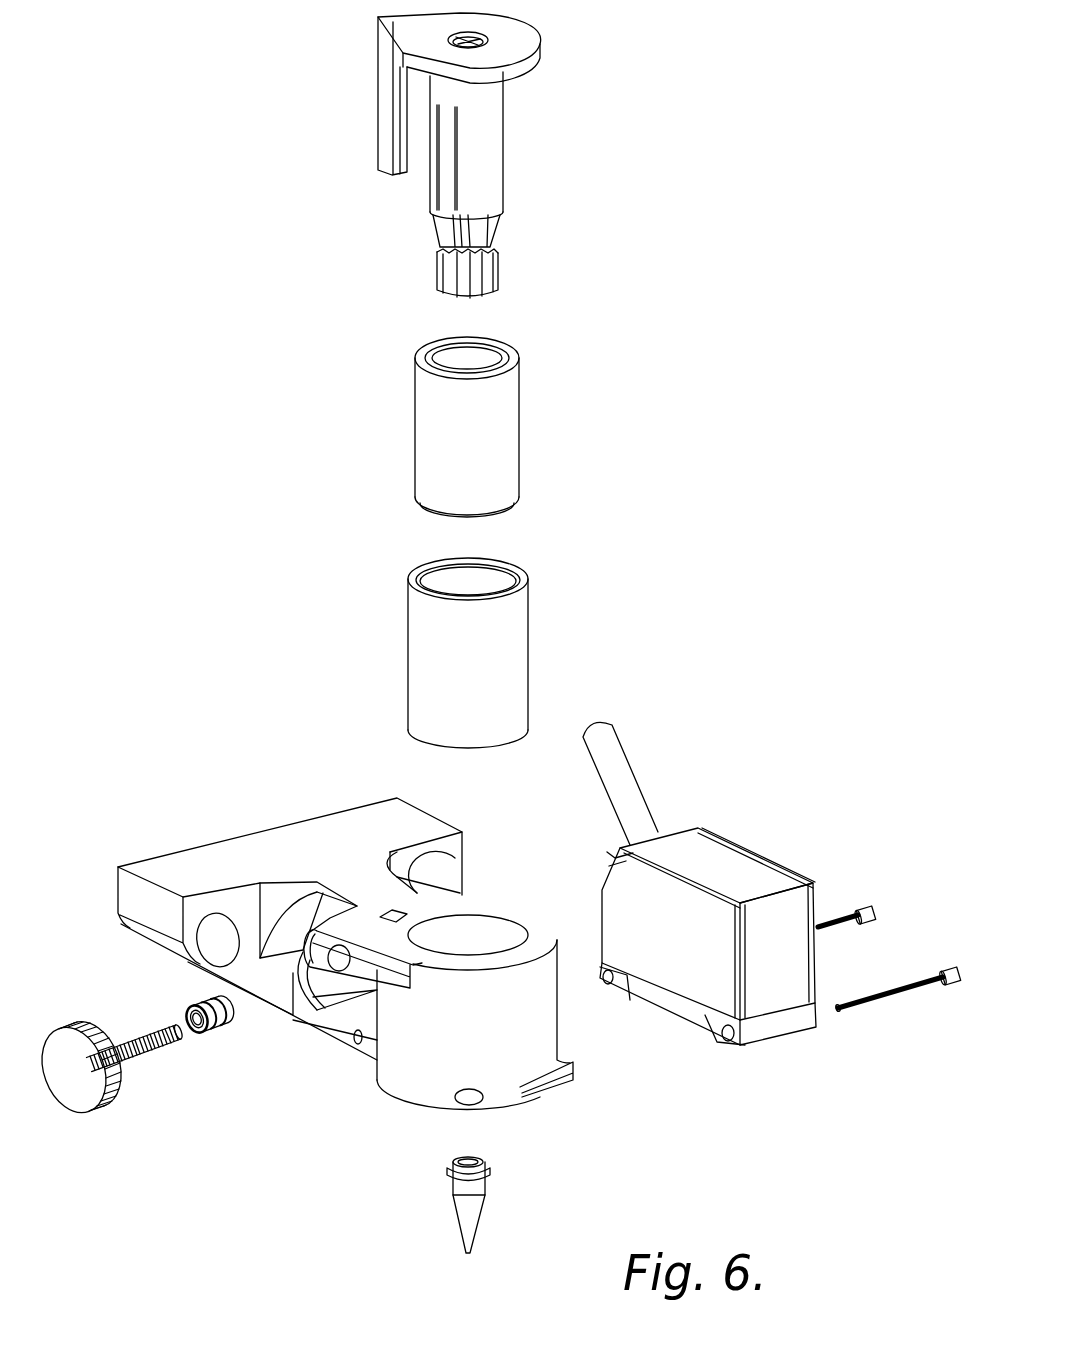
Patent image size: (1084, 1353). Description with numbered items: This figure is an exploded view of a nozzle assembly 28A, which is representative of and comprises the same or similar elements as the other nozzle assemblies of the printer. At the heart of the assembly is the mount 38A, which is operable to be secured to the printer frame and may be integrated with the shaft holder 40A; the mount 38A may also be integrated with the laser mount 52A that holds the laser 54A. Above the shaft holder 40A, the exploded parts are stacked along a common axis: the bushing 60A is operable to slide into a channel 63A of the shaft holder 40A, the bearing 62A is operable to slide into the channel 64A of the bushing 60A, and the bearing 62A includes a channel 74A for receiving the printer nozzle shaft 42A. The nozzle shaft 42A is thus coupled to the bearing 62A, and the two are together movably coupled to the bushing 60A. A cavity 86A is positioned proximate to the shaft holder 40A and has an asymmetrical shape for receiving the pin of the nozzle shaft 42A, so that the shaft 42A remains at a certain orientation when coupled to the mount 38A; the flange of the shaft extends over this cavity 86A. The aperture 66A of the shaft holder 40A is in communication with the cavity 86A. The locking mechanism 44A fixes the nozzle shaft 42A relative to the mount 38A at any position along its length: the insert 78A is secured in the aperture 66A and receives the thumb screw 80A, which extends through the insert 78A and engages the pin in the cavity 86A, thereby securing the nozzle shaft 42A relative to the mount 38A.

The nozzle assembly 28A is at (110, 0).
The nozzle shaft 42A is at (503, 147).
The channel of the bearing 74A is at (500, 343).
The bearing 62A is at (512, 440).
The channel of the bushing 64A is at (505, 577).
The bushing 60A is at (525, 666).
The mount 38A is at (227, 843).
The cavity 86A is at (393, 917).
The laser mount 52A is at (425, 900).
The channel of the shaft holder 63A is at (488, 931).
The laser 54A is at (743, 870).
The thumb screw 80A is at (73, 1057).
The aperture 66A is at (345, 960).
The insert 78A is at (210, 1032).
The locking mechanism 44A is at (170, 1078).
The shaft holder 40A is at (543, 1040).